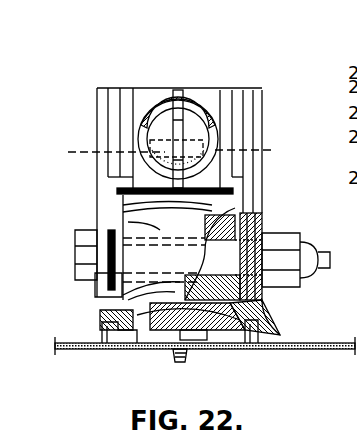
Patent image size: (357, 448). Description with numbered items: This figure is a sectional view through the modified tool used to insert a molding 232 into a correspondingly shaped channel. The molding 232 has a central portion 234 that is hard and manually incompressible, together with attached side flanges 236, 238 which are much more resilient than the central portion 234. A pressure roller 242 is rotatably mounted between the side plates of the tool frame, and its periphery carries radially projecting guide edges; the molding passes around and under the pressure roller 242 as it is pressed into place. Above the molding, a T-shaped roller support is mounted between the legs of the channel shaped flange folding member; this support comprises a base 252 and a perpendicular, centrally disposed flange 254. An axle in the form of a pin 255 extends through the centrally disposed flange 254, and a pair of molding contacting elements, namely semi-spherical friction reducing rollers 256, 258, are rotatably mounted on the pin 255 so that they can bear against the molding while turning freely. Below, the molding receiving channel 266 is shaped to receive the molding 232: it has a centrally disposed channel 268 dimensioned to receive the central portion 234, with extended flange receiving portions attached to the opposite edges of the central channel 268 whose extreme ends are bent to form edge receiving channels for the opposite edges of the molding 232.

The molding 232 is at (185, 89).
The central portion 234 is at (165, 347).
The side flange 236 is at (132, 139).
The side flange 238 is at (212, 122).
The pressure roller 242 is at (143, 230).
The base 252 is at (120, 215).
The centrally disposed flange 254 is at (207, 163).
The pin 255 is at (152, 150).
The semi-spherical friction reducing roller 256 is at (135, 160).
The semi-spherical friction reducing roller 258 is at (207, 158).
The molding receiving channel 266 is at (255, 336).
The centrally disposed channel 268 is at (198, 345).